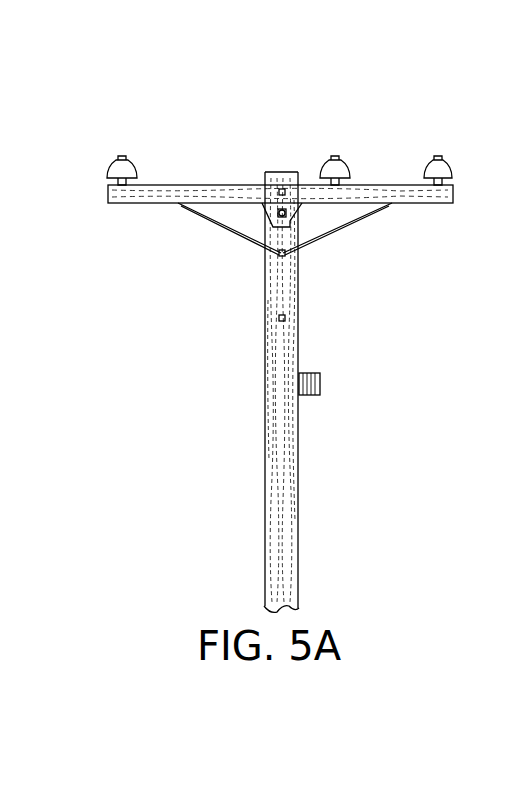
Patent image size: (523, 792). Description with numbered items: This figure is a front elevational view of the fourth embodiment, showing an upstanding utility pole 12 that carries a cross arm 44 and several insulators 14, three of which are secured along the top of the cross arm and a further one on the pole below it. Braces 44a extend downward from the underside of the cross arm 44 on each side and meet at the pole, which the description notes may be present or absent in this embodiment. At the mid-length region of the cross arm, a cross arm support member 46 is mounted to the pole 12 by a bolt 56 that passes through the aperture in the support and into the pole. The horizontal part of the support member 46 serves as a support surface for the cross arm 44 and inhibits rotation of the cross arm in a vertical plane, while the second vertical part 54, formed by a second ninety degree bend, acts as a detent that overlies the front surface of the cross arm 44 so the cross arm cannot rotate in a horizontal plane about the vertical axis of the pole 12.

The pole 12 is at (263, 362).
The insulator 14 is at (113, 160).
The cross arm 44 is at (163, 186).
The braces 44a is at (268, 226).
The cross arm support member 46 is at (270, 230).
The second vertical part 54 is at (279, 210).
The bolt 56 is at (277, 214).